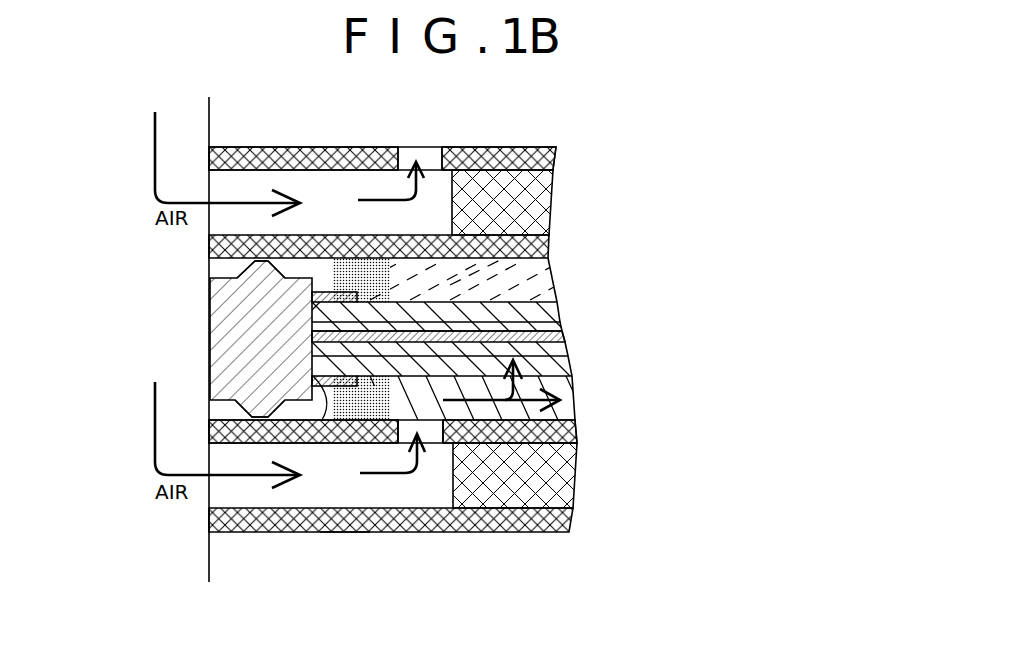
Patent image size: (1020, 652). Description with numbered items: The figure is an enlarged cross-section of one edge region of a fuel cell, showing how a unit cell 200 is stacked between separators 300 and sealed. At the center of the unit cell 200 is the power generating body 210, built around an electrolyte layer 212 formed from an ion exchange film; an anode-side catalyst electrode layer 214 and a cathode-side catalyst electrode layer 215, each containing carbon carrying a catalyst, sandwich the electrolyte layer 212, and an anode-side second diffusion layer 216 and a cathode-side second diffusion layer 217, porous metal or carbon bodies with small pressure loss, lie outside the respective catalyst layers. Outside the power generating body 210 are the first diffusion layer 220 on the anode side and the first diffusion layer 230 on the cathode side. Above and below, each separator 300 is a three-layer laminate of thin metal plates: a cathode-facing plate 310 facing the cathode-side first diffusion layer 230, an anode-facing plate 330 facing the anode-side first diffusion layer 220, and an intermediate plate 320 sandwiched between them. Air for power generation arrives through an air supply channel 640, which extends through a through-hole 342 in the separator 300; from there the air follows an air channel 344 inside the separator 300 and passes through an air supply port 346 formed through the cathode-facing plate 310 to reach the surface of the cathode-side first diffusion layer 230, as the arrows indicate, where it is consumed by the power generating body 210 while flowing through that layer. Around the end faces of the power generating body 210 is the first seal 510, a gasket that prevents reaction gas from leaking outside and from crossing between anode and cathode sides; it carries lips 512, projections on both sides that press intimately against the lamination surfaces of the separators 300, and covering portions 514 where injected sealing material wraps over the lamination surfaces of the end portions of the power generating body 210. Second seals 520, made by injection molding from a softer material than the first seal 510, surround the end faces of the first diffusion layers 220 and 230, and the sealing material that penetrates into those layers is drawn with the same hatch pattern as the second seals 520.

The unit cell 200 is at (556, 338).
The power generating body 210 is at (524, 338).
The electrolyte layer 212 is at (563, 338).
The anode-side catalyst electrode layer 214 is at (560, 328).
The cathode-side catalyst electrode layer 215 is at (567, 350).
The anode-side second diffusion layer 216 is at (557, 310).
The cathode-side second diffusion layer 217 is at (521, 386).
The anode-side first diffusion layer 220 is at (550, 265).
The cathode-side first diffusion layer 230 is at (559, 398).
The separator 300 is at (477, 339).
The cathode-facing plate 310 is at (557, 158).
The intermediate plate 320 is at (553, 200).
The anode-facing plate 330 is at (548, 245).
The through-hole 342 is at (210, 518).
The air channel 344 is at (343, 532).
The air supply port 346 is at (430, 432).
The first seal 510 is at (210, 308).
The lip 512 is at (245, 271).
The covering portion 514 is at (313, 300).
The second seal 520 is at (362, 300).
The air supply channel 640 is at (210, 557).